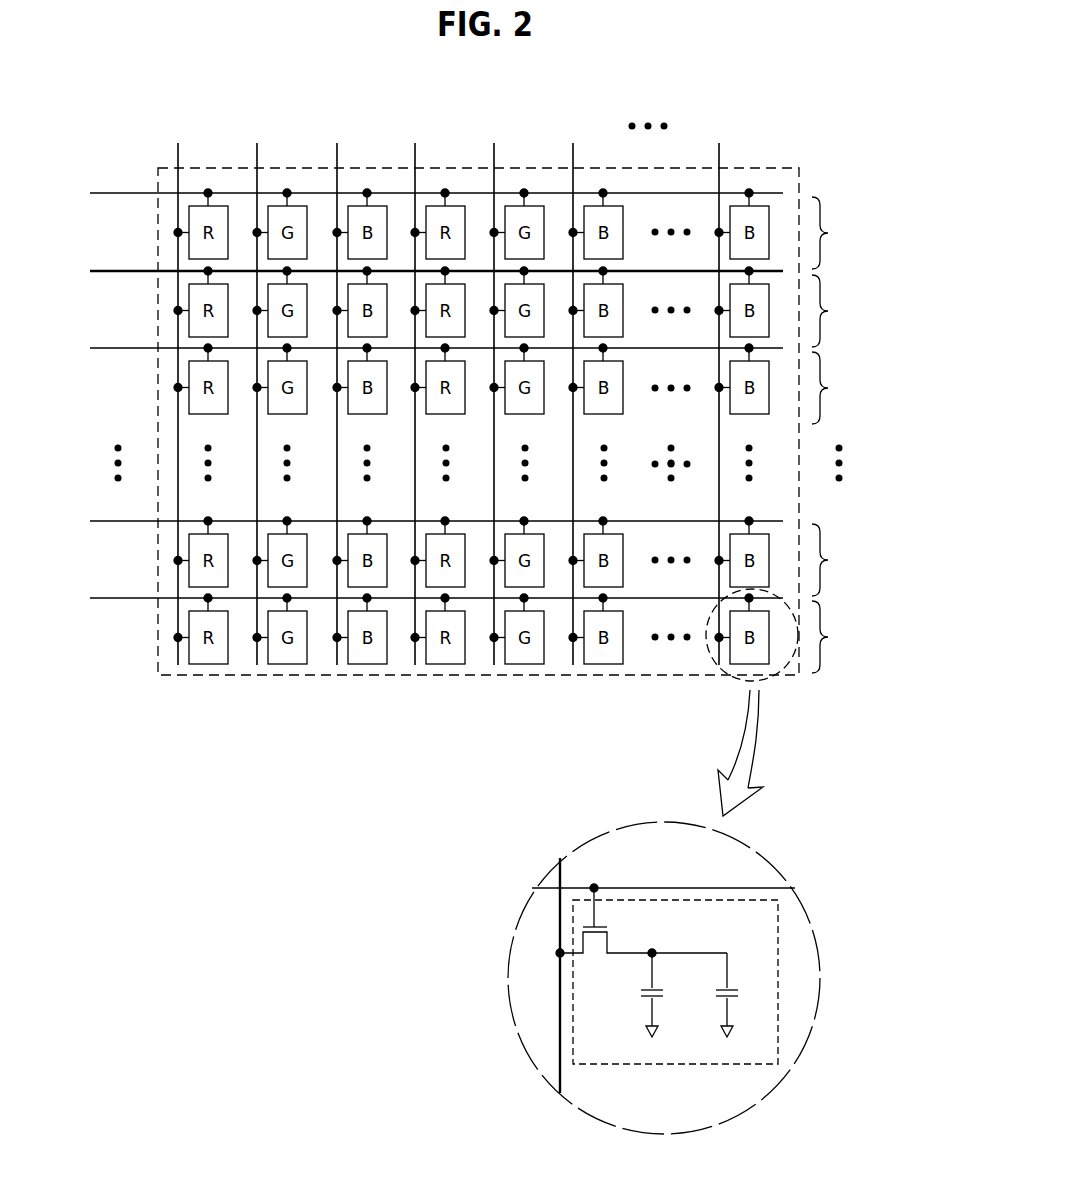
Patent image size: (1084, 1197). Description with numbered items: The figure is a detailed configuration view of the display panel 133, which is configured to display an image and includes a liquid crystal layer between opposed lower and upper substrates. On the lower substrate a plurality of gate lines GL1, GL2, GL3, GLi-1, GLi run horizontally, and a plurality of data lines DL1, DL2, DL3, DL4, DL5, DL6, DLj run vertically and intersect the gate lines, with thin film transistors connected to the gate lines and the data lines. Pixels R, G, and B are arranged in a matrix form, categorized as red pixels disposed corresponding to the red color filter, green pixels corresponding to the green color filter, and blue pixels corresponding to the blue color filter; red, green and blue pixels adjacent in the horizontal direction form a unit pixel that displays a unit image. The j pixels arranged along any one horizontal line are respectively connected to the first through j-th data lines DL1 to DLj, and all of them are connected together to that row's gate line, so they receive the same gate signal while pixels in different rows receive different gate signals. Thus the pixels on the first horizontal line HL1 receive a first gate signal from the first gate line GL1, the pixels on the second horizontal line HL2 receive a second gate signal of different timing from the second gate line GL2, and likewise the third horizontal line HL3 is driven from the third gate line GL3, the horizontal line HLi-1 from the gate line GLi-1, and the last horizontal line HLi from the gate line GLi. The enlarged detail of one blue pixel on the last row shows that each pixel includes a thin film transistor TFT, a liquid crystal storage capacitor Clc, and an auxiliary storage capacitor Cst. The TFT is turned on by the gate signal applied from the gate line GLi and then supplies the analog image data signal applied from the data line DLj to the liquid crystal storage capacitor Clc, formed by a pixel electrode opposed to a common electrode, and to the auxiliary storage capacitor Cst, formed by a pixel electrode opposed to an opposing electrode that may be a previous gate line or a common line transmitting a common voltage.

The display panel 133 is at (758, 168).
The first data line DL1 is at (182, 391).
The second data line DL2 is at (261, 391).
The third data line DL3 is at (341, 391).
The fourth data line DL4 is at (419, 391).
The fifth data line DL5 is at (498, 391).
The sixth data line DL6 is at (577, 391).
The j-th data line DLj is at (470, 930).
The first gate line GL1 is at (436, 181).
The second gate line GL2 is at (436, 259).
The third gate line GL3 is at (436, 337).
The (i-1)-th gate line GLi-1 is at (436, 510).
The i-th gate line GLi is at (625, 888).
The first horizontal line HL1 is at (841, 233).
The second horizontal line HL2 is at (841, 311).
The third horizontal line HL3 is at (841, 388).
The (i-1)-th horizontal line HLi-1 is at (851, 560).
The i-th horizontal line HLi is at (840, 637).
The thin film transistor TFT is at (643, 933).
The liquid crystal storage capacitor Clc is at (665, 995).
The auxiliary storage capacitor Cst is at (740, 995).